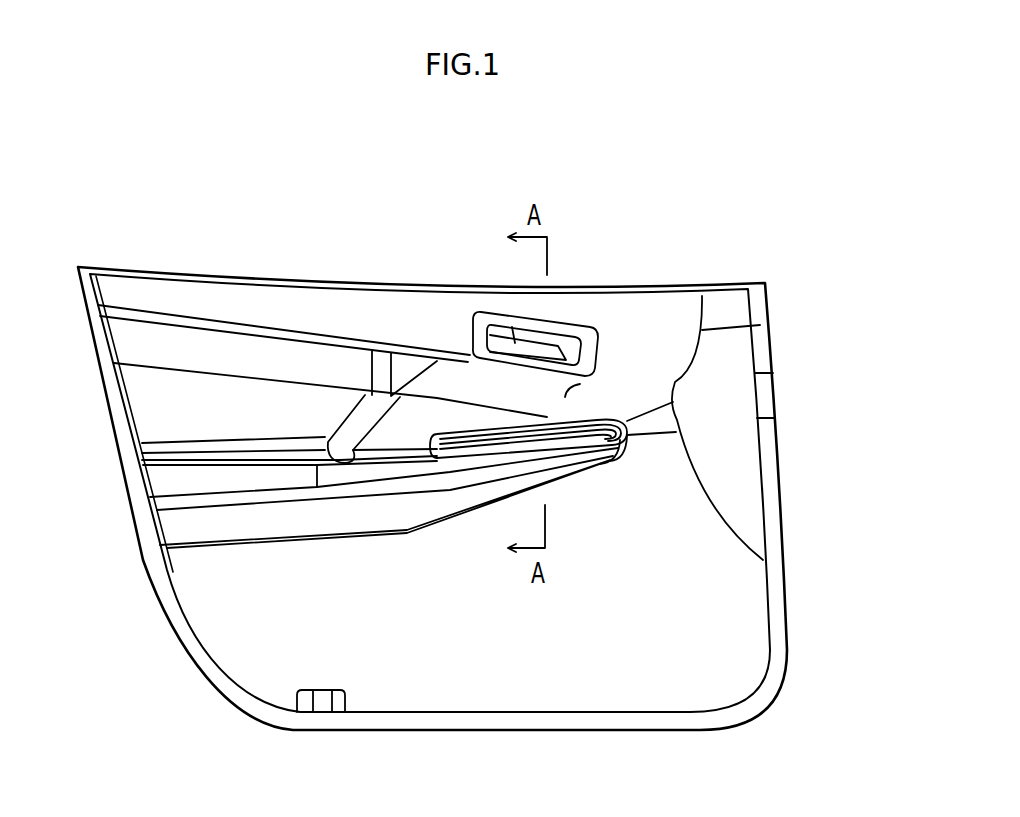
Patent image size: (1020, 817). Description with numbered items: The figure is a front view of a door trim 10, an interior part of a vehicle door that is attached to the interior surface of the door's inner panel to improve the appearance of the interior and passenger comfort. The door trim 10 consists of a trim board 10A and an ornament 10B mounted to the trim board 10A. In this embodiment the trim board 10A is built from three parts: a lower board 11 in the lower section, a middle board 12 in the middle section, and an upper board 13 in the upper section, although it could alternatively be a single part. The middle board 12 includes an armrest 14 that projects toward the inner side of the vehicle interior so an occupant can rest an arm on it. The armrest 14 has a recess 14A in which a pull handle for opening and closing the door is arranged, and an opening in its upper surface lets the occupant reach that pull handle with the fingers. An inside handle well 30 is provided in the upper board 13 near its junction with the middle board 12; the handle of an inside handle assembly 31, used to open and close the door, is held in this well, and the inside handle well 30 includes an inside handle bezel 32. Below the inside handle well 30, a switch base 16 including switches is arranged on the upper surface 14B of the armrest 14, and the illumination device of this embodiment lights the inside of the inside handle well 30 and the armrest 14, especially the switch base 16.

The door trim 10 is at (747, 247).
The trim board 10A is at (494, 449).
The ornament 10B is at (137, 335).
The lower board 11 is at (737, 594).
The middle board 12 is at (567, 397).
The upper board 13 is at (223, 295).
The armrest 14 is at (175, 483).
The recess 14A is at (330, 440).
The upper surface 14B is at (528, 439).
The switch base 16 is at (500, 417).
The inside handle well 30 is at (579, 309).
The inside handle assembly 31 is at (468, 362).
The inside handle bezel 32 is at (598, 342).